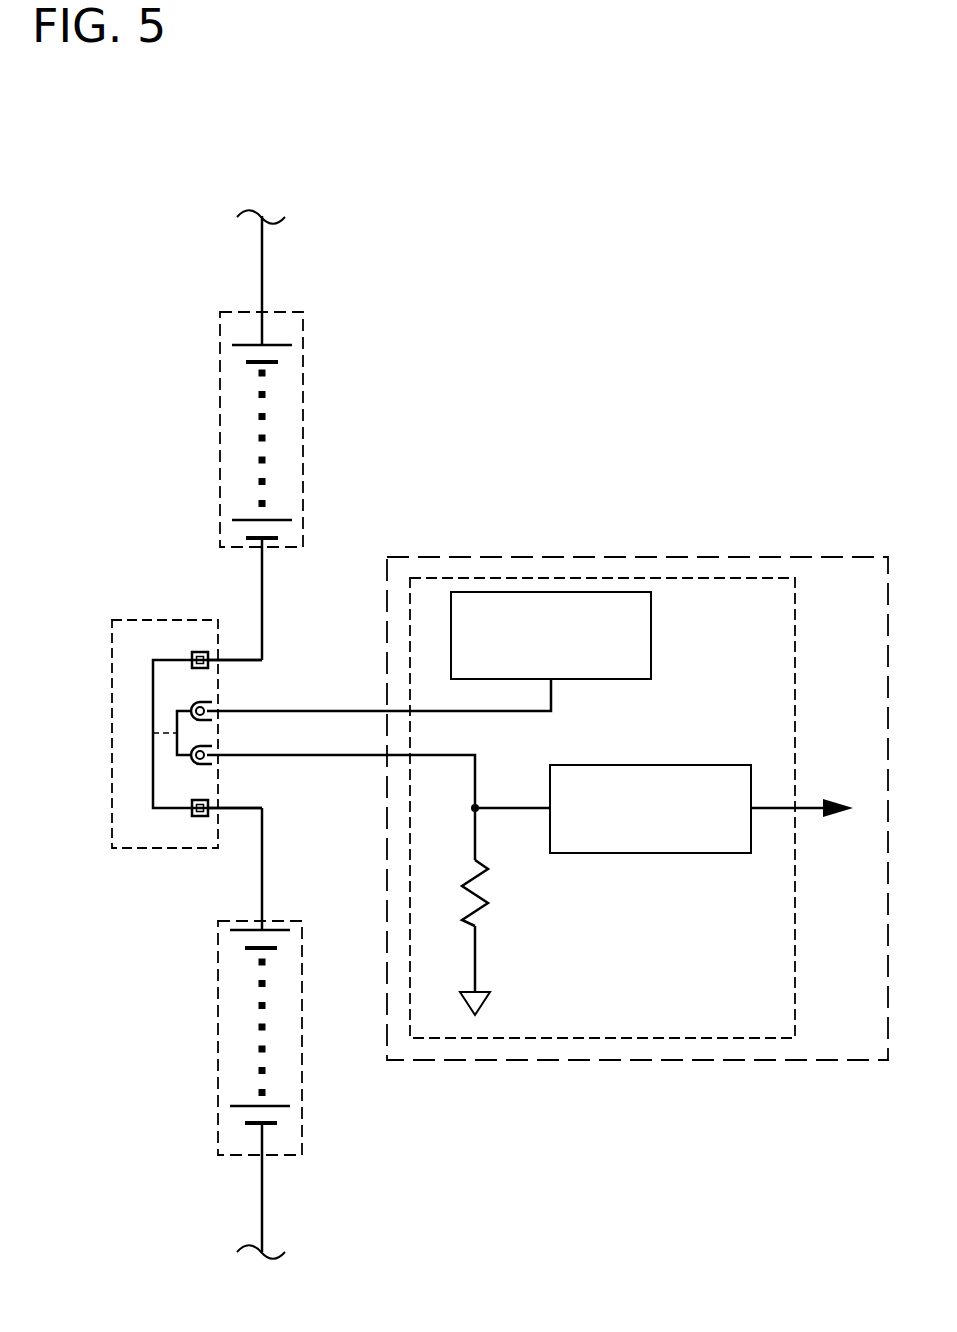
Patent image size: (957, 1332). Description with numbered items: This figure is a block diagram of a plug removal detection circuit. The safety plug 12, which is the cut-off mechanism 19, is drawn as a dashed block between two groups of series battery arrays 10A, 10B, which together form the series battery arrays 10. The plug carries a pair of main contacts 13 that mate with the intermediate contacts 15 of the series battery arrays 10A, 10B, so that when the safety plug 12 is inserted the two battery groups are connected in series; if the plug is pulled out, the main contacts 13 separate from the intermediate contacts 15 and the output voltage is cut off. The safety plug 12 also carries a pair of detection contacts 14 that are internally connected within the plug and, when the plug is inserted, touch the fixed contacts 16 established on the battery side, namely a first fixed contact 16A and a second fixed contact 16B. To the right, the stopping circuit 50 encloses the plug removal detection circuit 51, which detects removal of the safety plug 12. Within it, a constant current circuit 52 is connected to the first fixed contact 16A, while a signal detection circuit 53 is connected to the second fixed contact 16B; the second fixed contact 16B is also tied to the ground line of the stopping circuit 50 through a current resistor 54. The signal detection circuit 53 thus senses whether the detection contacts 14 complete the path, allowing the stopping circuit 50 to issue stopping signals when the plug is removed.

The series battery arrays 10 is at (384, 734).
The series battery array 10A is at (303, 422).
The series battery array 10B is at (302, 1117).
The safety plug 12 is at (128, 620).
The cut-off mechanism 19 is at (302, 703).
The main contacts 13 is at (192, 652).
The detection contacts 14 is at (192, 707).
The intermediate contacts 15 is at (210, 657).
The fixed contacts 16 is at (383, 670).
The first fixed contact 16A is at (212, 712).
The second fixed contact 16B is at (212, 753).
The stopping circuit 50 is at (708, 557).
The plug removal detection circuit 51 is at (590, 578).
The constant current circuit 52 is at (651, 638).
The signal detection circuit 53 is at (703, 853).
The current resistor 54 is at (478, 900).